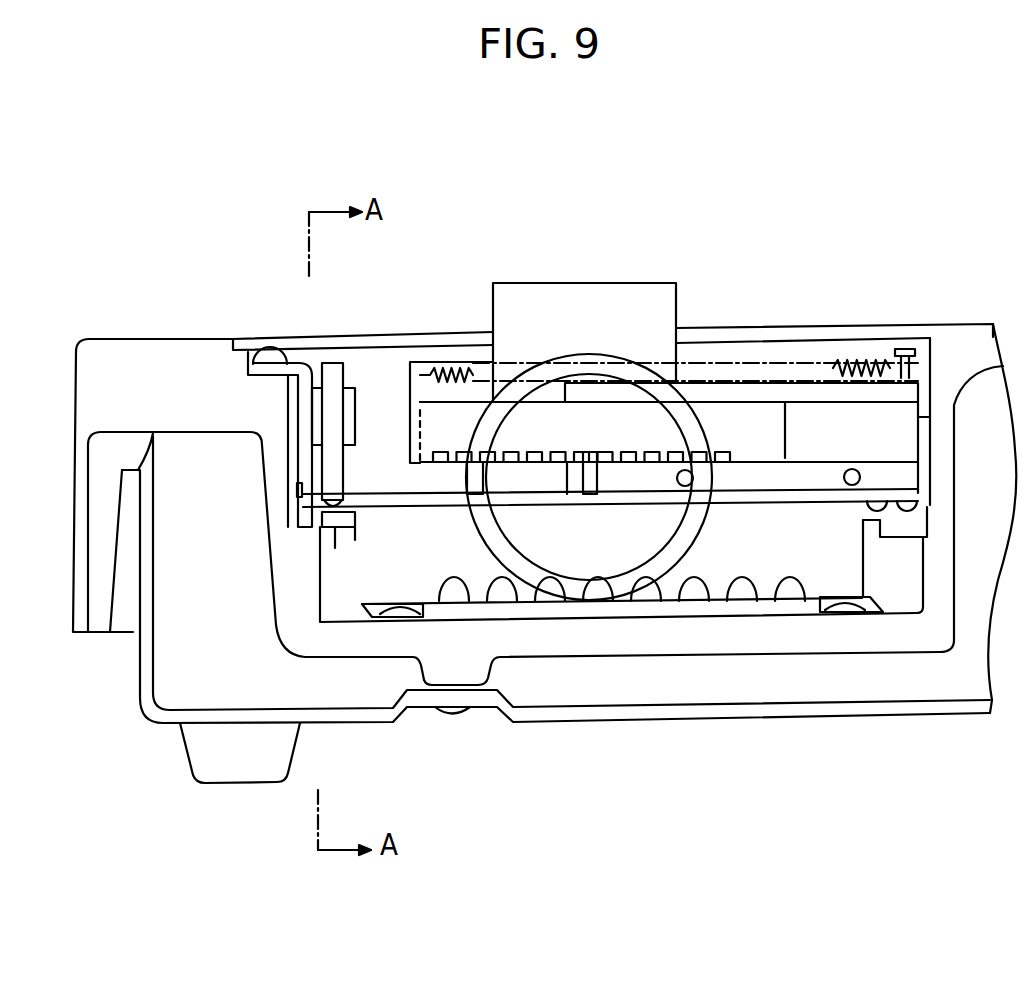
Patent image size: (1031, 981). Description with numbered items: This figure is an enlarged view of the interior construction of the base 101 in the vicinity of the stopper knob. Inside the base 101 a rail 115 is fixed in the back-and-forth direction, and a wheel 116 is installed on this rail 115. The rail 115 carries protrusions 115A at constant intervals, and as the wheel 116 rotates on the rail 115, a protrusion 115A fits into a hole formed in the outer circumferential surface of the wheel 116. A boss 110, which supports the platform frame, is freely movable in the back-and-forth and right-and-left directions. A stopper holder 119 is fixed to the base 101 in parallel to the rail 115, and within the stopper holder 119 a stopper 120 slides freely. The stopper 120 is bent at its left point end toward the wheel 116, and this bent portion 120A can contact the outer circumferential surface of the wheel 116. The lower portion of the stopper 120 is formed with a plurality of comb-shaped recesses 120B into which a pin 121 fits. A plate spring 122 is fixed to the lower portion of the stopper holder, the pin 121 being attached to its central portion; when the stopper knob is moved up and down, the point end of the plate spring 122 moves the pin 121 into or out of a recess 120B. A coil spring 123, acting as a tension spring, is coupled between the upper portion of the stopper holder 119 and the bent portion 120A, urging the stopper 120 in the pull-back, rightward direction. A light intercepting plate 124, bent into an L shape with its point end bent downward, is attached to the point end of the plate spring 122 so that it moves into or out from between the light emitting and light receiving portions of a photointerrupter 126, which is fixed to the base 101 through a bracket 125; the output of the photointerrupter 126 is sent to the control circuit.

The base 101 is at (150, 337).
The boss 110 is at (587, 297).
The rail 115 is at (722, 610).
The protrusions 115A is at (788, 592).
The wheel 116 is at (627, 557).
The stopper holder 119 is at (888, 475).
The stopper 120 is at (613, 420).
The bent portion 120A is at (415, 362).
The comb-shaped recesses 120B is at (508, 465).
The pin 121 is at (588, 478).
The plate spring 122 is at (813, 498).
The coil spring 123 is at (792, 358).
The light intercepting plate 124 is at (332, 387).
The bracket 125 is at (273, 340).
The photointerrupter 126 is at (352, 455).